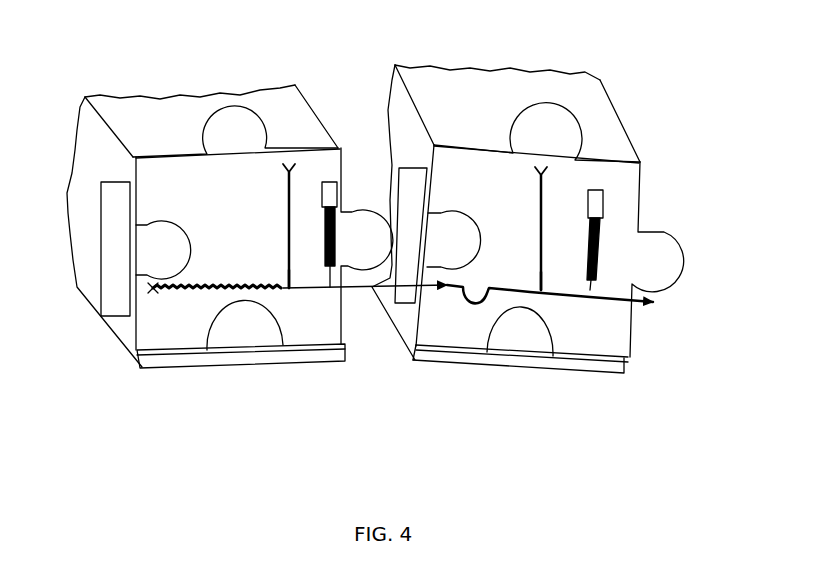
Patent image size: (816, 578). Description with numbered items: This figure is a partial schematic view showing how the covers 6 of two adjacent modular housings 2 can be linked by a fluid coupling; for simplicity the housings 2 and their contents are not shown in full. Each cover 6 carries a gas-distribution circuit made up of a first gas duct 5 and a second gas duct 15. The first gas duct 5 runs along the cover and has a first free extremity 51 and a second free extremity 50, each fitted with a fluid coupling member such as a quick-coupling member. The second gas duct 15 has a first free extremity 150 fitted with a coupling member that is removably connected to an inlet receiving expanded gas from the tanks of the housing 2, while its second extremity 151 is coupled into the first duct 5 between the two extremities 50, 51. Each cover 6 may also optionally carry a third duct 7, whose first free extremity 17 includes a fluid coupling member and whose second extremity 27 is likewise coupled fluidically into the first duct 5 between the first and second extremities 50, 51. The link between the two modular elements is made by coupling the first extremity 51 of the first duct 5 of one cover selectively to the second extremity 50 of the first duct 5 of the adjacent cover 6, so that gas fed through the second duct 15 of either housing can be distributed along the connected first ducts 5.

The housing 2 is at (152, 127).
The first gas duct 5 is at (307, 293).
The cover 6 is at (160, 175).
The third duct 7 is at (283, 207).
The first free extremity of the third duct 17 is at (283, 170).
The second extremity of the third duct 27 is at (283, 280).
The first free extremity of the second gas duct 150 is at (328, 178).
The second gas duct 15 is at (343, 218).
The second extremity of the second gas duct 151 is at (335, 280).
The second free extremity of the first gas duct 50 is at (654, 307).
The first free extremity of the first gas duct 51 is at (158, 298).